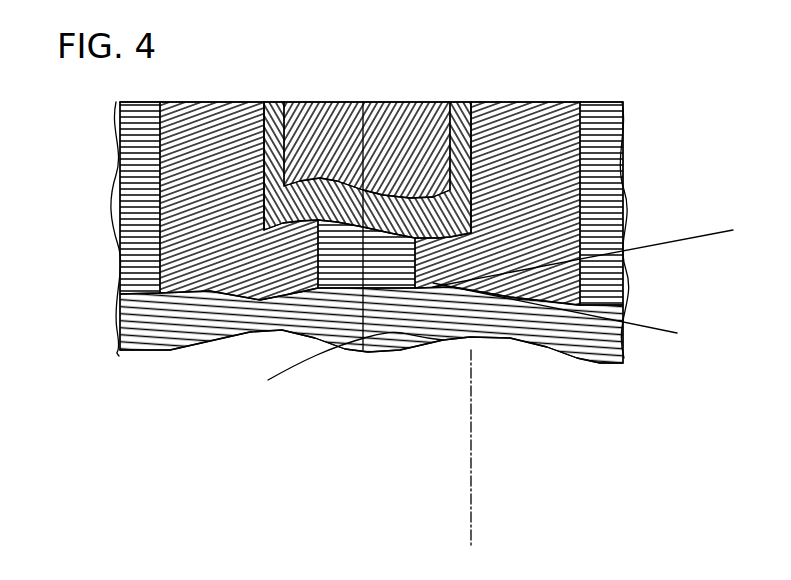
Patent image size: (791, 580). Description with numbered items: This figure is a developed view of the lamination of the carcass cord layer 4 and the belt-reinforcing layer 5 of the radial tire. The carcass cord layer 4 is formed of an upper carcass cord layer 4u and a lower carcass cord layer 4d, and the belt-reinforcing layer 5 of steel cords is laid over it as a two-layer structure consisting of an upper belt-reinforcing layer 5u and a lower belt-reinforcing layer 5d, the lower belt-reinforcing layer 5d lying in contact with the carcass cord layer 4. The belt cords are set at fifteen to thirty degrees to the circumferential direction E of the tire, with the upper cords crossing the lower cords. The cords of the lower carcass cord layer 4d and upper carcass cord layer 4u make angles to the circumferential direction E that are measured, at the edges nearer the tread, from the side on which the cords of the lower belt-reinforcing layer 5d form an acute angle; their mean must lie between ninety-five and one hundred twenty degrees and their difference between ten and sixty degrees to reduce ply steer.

The carcass cord layer 4 is at (273, 427).
The lower carcass cord layer 4d is at (192, 325).
The upper carcass cord layer 4u is at (278, 287).
The belt-reinforcing layer 5 is at (348, 45).
The lower belt-reinforcing layer 5d is at (275, 102).
The upper belt-reinforcing layer 5u is at (322, 102).
The circumferential direction E is at (363, 102).